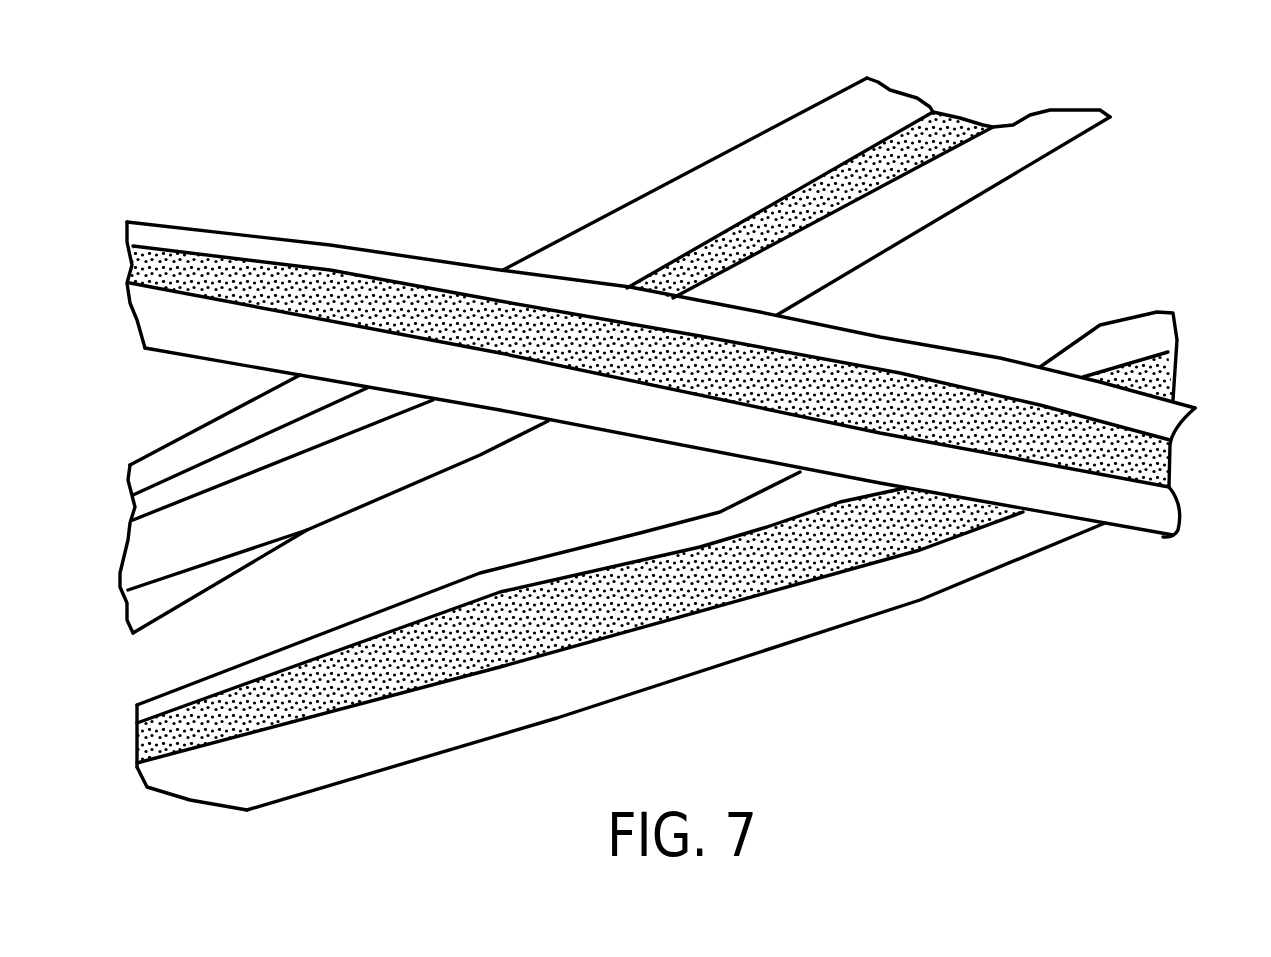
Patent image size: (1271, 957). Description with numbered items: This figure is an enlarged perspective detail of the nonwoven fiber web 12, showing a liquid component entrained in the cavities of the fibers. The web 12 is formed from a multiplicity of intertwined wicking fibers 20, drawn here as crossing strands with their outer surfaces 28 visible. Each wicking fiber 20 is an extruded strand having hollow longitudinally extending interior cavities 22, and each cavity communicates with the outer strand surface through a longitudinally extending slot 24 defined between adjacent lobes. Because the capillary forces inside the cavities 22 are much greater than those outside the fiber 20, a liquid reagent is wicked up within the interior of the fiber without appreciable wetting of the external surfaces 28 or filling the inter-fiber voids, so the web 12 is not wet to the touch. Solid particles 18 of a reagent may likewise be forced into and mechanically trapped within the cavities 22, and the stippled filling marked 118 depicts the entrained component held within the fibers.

The nonwoven fiber web 12 is at (659, 424).
The solid particles 18 is at (947, 128).
The wicking fiber 20 is at (1020, 130).
The interior cavities 22 is at (150, 268).
The slot 24 is at (133, 506).
The outer surface 28 is at (350, 256).
The adhesive layer of lower strip 118 is at (432, 670).